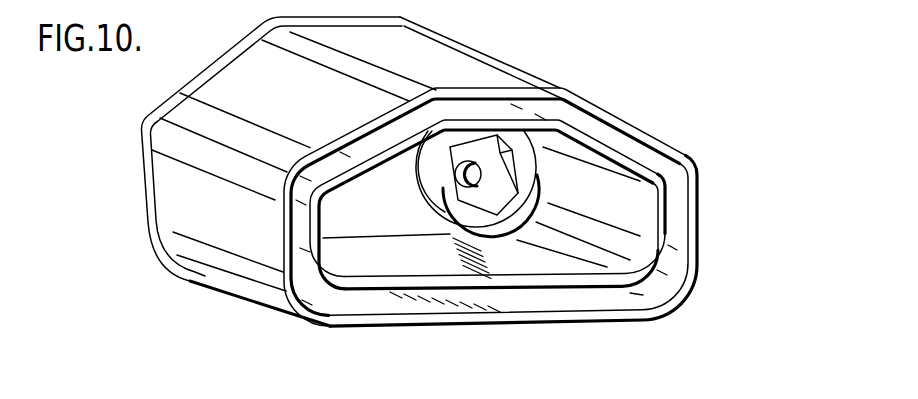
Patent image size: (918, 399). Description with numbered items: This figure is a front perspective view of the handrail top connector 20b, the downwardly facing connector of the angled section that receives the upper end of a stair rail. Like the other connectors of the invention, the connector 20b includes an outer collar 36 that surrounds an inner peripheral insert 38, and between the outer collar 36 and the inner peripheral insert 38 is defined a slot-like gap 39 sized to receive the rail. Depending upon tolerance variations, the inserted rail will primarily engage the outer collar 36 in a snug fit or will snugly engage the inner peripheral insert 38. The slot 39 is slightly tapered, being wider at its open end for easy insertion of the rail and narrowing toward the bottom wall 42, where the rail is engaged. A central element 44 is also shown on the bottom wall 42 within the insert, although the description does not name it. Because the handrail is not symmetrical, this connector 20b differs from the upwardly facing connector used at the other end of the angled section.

The handrail top connector 20b is at (342, 338).
The outer collar 36 is at (641, 112).
The inner peripheral insert 38 is at (613, 197).
The slot-like gap 39 is at (666, 160).
The bottom wall 42 is at (393, 209).
The nut boss 44 is at (452, 236).